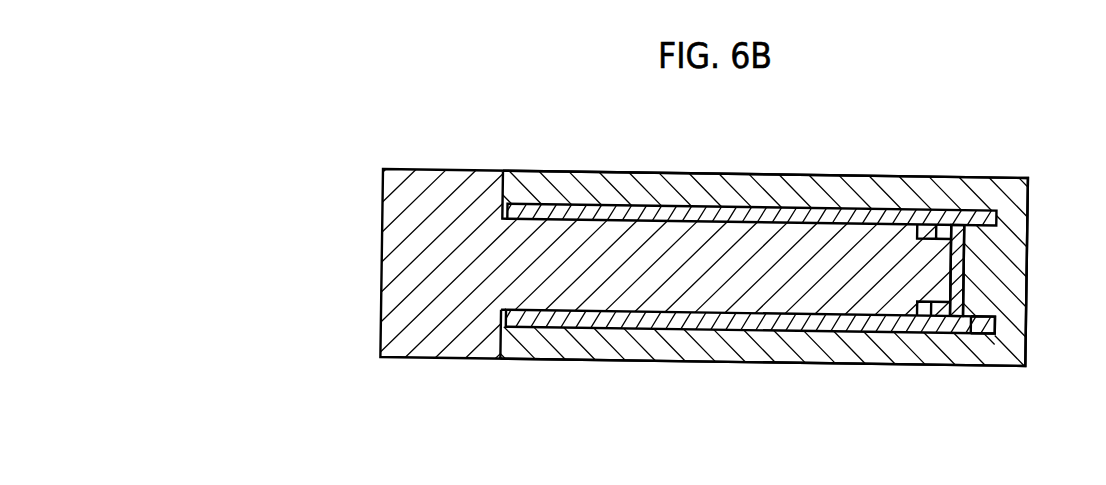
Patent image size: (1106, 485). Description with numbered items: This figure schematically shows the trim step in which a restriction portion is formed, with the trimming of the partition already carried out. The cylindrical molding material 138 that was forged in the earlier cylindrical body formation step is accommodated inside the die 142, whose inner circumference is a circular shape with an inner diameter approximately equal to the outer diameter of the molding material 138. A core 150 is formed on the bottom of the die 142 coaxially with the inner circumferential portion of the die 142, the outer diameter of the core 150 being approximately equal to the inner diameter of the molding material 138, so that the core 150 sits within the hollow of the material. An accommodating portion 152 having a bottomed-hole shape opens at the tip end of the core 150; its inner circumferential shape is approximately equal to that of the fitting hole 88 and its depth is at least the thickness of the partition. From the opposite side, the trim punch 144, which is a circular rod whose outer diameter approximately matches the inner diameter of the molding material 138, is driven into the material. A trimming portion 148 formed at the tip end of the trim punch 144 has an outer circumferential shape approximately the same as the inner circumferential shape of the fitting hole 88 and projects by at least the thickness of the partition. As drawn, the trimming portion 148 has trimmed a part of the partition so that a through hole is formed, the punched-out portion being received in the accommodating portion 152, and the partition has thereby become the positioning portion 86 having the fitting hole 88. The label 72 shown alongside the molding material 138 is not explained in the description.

The die 142 is at (537, 170).
The molding material 138 is at (752, 167).
The electrode 72 is at (616, 210).
The trim punch 144 is at (603, 283).
The positioning portion 86 is at (900, 222).
The fitting hole 88 is at (927, 303).
The core 150 is at (953, 233).
The trimming portion 148 is at (942, 271).
The accommodating portion 152 is at (938, 303).